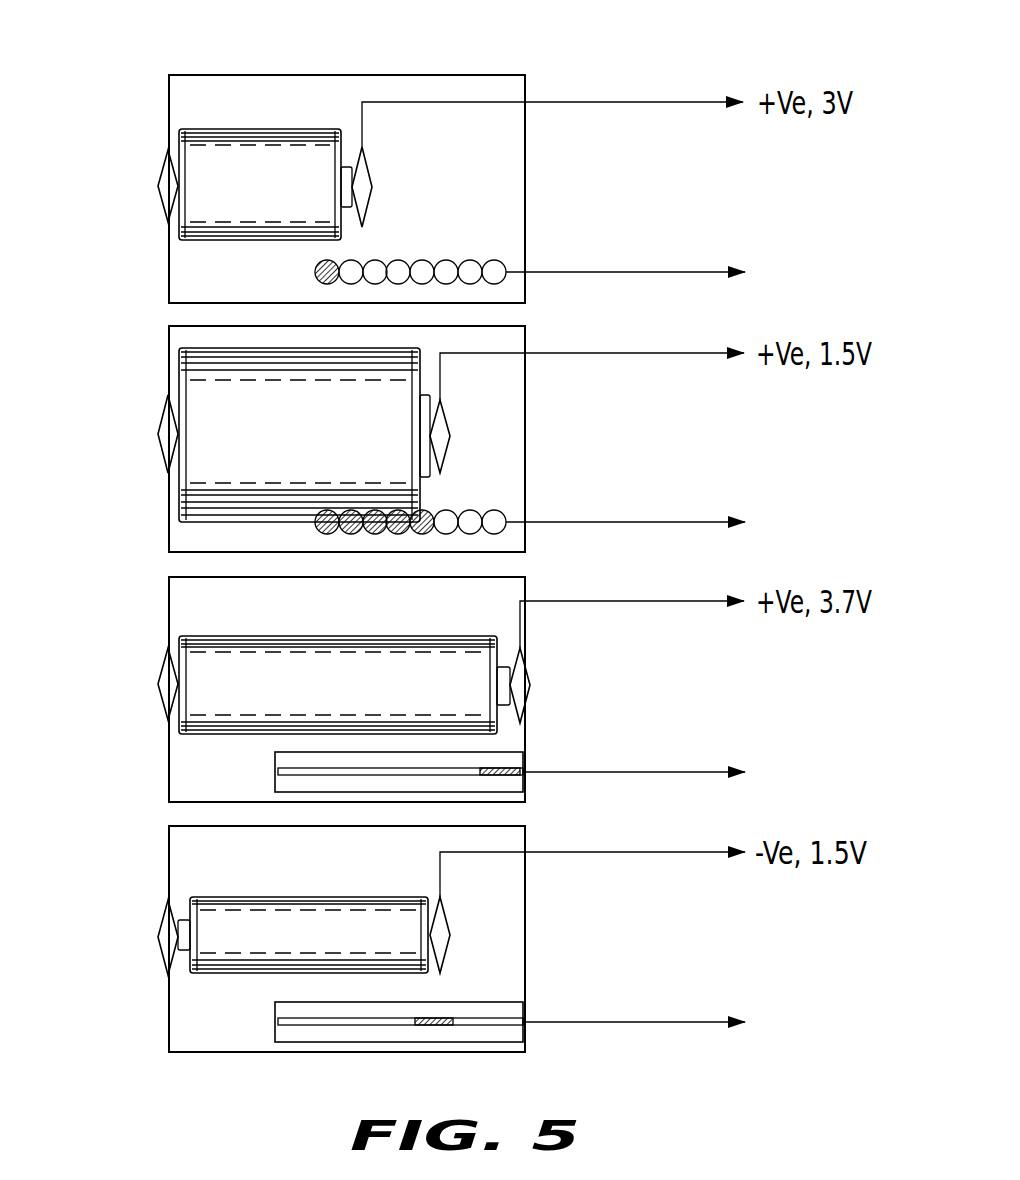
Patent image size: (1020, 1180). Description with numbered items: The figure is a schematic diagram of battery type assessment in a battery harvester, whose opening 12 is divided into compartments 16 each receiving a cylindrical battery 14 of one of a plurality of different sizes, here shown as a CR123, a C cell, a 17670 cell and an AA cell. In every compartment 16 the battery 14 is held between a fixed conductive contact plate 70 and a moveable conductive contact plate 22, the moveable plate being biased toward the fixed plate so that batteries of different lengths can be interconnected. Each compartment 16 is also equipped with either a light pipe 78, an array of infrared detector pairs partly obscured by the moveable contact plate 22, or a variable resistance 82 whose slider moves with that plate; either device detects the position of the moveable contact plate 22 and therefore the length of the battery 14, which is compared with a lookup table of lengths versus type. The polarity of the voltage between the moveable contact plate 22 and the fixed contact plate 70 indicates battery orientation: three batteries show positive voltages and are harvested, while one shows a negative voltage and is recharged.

The opening 12 is at (168, 780).
The battery 14 is at (235, 663).
The compartment 16 is at (271, 113).
The moveable conductive contact plate 22 is at (372, 190).
The fixed conductive contact plate 70 is at (158, 187).
The light pipe 78 is at (487, 260).
The variable resistance 82 is at (513, 752).